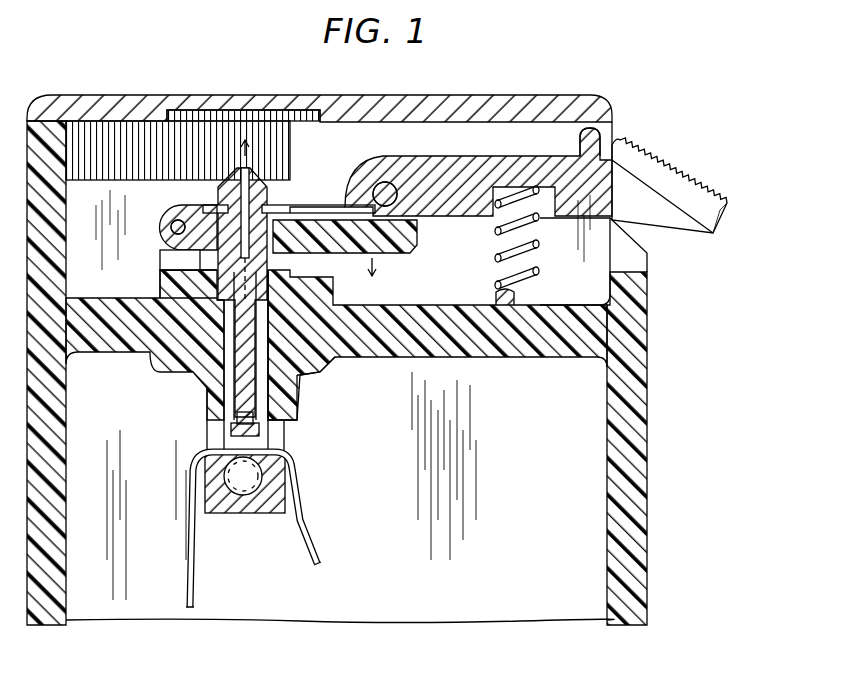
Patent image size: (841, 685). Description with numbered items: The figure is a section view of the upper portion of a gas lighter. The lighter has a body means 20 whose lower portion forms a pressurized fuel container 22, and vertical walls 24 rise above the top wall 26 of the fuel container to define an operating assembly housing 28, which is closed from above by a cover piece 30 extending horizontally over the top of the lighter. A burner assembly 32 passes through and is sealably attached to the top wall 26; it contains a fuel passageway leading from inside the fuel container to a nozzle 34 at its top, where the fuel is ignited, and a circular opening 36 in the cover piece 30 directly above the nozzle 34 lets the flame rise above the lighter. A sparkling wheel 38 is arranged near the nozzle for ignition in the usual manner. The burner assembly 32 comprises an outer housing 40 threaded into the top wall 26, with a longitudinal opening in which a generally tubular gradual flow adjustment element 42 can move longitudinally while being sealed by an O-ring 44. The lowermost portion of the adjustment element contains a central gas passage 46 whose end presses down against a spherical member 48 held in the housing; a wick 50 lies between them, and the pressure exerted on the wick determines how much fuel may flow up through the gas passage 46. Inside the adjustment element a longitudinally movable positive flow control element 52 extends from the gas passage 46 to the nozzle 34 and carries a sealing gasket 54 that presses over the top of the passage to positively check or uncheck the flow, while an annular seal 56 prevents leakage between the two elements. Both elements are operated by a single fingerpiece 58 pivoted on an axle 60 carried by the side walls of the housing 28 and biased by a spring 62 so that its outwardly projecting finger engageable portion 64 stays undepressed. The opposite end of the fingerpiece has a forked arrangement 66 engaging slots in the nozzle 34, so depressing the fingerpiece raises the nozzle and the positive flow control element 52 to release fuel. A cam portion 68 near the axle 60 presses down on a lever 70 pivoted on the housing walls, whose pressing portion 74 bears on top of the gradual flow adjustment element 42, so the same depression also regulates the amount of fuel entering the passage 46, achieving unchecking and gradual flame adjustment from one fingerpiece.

The body means 20 is at (669, 420).
The pressurized fuel container 22 is at (340, 497).
The vertical walls 24 is at (66, 257).
The top wall 26 is at (432, 306).
The operating assembly housing 28 is at (197, 220).
The cover piece 30 is at (515, 104).
The burner assembly 32 is at (175, 380).
The nozzle 34 is at (258, 180).
The circular opening 36 is at (318, 110).
The sparkling wheel 38 is at (106, 128).
The outer housing 40 is at (281, 377).
The gradual flow adjustment element 42 is at (280, 433).
The O-ring 44 is at (290, 368).
The central gas passage 46 is at (231, 428).
The spherical member 48 is at (249, 490).
The wick 50 is at (190, 582).
The positive flow control element 52 is at (230, 396).
The sealing gasket 54 is at (232, 416).
The annular seal 56 is at (165, 322).
The single fingerpiece 58 is at (470, 157).
The axle 60 is at (372, 190).
The spring 62 is at (500, 270).
The finger engageable portion 64 is at (678, 163).
The forked arrangement 66 is at (210, 205).
The cam portion 68 is at (415, 210).
The lever 70 is at (366, 250).
The pressing portion 74 is at (585, 134).